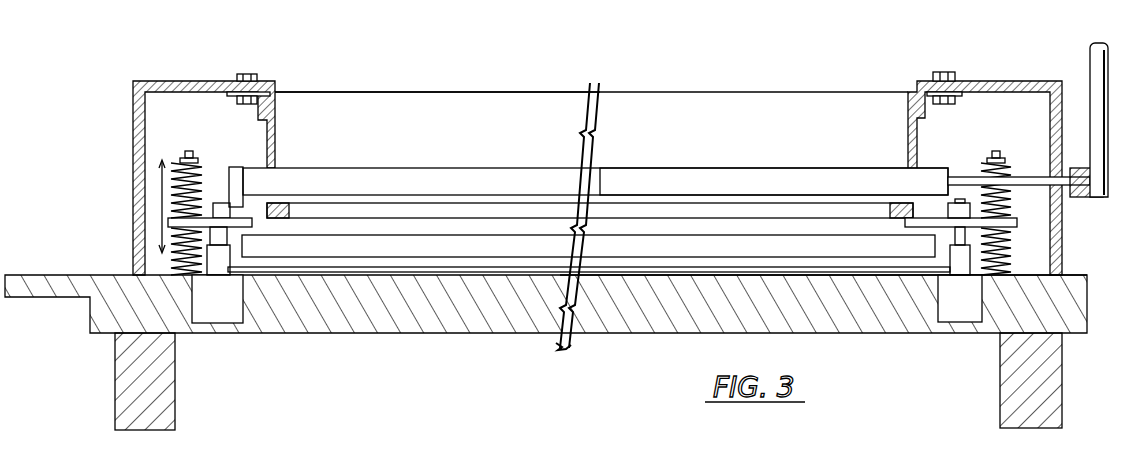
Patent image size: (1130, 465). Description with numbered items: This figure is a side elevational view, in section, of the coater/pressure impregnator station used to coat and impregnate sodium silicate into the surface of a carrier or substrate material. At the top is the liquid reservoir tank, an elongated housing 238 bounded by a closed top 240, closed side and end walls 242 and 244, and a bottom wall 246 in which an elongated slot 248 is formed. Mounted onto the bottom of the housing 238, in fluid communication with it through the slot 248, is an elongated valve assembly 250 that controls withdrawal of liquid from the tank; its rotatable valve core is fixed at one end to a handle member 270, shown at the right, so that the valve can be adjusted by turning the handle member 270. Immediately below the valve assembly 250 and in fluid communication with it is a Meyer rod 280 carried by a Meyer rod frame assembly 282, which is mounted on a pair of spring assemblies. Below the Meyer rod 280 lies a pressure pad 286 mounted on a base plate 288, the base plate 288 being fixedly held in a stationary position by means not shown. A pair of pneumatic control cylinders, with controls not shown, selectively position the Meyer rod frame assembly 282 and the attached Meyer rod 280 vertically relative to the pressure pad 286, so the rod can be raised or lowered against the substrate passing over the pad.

The elongated housing 238 is at (640, 92).
The closed top 240 is at (446, 97).
The closed side wall 242 is at (275, 150).
The closed end wall 244 is at (908, 142).
The bottom wall 246 is at (425, 205).
The elongated slot 248 is at (485, 213).
The elongated valve assembly 250 is at (638, 170).
The handle member 270 is at (1088, 72).
The Meyer rod 280 is at (413, 245).
The Meyer rod frame assembly 282 is at (507, 230).
The pressure pad 286 is at (634, 270).
The base plate 288 is at (805, 313).